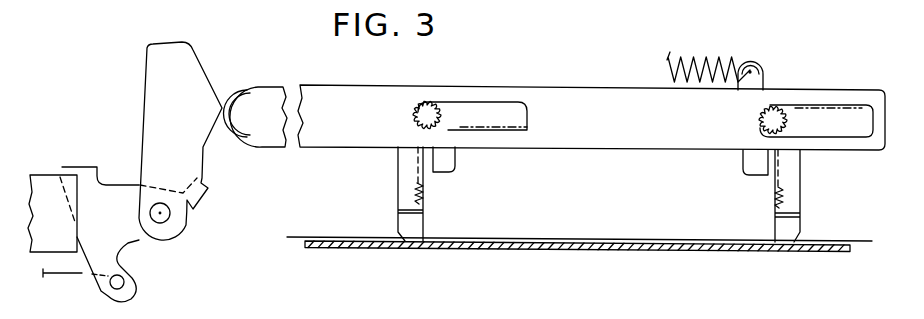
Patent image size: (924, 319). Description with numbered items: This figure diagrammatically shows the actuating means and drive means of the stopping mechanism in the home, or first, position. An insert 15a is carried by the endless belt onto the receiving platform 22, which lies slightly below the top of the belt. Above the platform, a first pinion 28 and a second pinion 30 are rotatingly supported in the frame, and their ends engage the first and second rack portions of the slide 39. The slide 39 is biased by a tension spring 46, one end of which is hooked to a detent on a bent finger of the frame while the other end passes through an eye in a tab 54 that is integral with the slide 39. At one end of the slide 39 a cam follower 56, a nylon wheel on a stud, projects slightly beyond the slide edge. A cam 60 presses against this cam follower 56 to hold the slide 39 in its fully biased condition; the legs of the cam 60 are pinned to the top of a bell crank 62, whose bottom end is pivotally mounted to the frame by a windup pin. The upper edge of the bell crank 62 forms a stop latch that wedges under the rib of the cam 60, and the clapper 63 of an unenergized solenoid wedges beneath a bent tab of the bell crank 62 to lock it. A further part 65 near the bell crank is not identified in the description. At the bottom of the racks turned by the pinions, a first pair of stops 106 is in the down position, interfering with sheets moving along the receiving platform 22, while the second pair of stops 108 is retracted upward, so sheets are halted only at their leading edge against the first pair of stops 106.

The insert 15a is at (322, 237).
The receiving platform 22 is at (557, 250).
The first pinion 28 is at (432, 104).
The second pinion 30 is at (762, 130).
The slide 39 is at (335, 122).
The tension spring 46 is at (670, 52).
The tab 54 is at (764, 80).
The cam follower 56 is at (238, 90).
The cam 60 is at (170, 117).
The bell crank 62 is at (95, 221).
The clapper 63 is at (40, 176).
The rod 65 is at (83, 279).
The first pair of stops 106 is at (398, 227).
The second pair of stops 108 is at (457, 160).